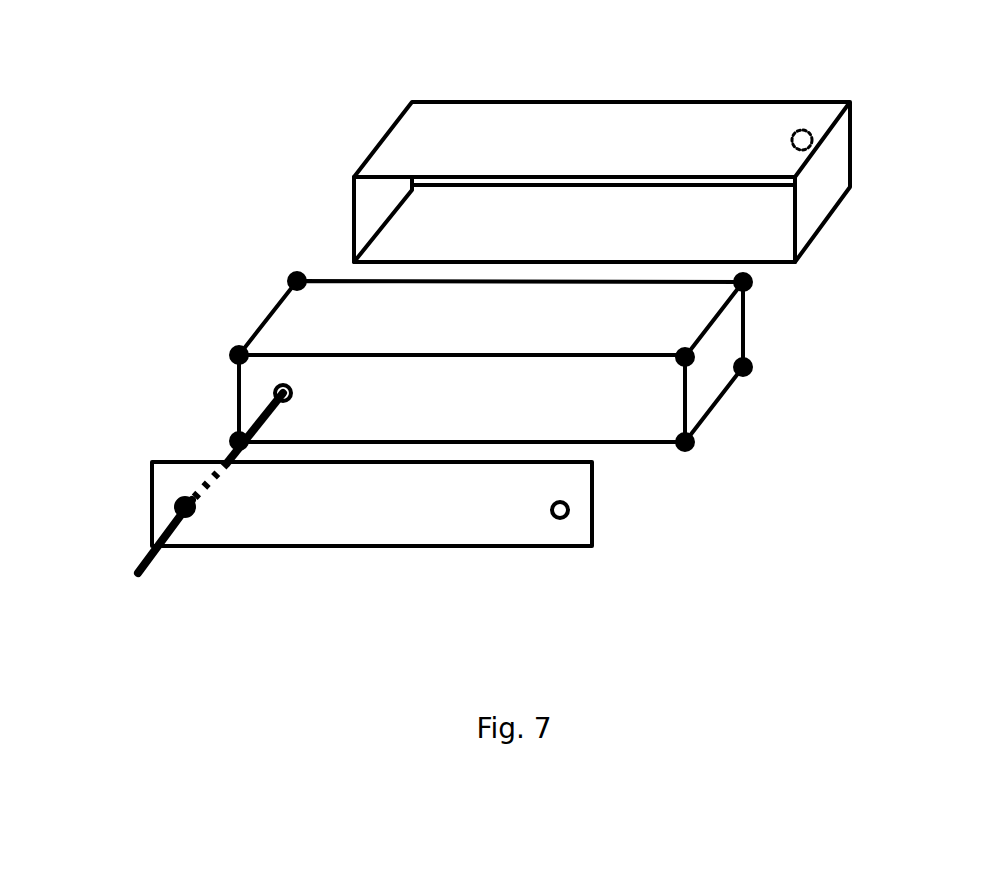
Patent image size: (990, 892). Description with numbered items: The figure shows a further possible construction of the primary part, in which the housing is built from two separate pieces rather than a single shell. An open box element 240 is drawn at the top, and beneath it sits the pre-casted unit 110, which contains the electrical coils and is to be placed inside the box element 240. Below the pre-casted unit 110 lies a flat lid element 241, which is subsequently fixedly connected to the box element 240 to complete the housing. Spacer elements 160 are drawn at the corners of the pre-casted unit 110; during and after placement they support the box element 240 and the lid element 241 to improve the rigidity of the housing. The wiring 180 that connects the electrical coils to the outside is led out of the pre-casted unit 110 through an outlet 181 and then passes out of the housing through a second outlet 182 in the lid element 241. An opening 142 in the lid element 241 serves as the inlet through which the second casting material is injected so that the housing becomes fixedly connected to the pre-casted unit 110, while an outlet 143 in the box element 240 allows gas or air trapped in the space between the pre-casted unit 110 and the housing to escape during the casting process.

The pre-casted unit 110 is at (712, 367).
The opening 142 is at (570, 516).
The outlet 143 is at (806, 127).
The spacer elements 160 is at (755, 280).
The wiring 180 is at (135, 562).
The outlet 181 is at (273, 393).
The outlet 182 is at (175, 507).
The box element 240 is at (812, 195).
The lid element 241 is at (372, 508).